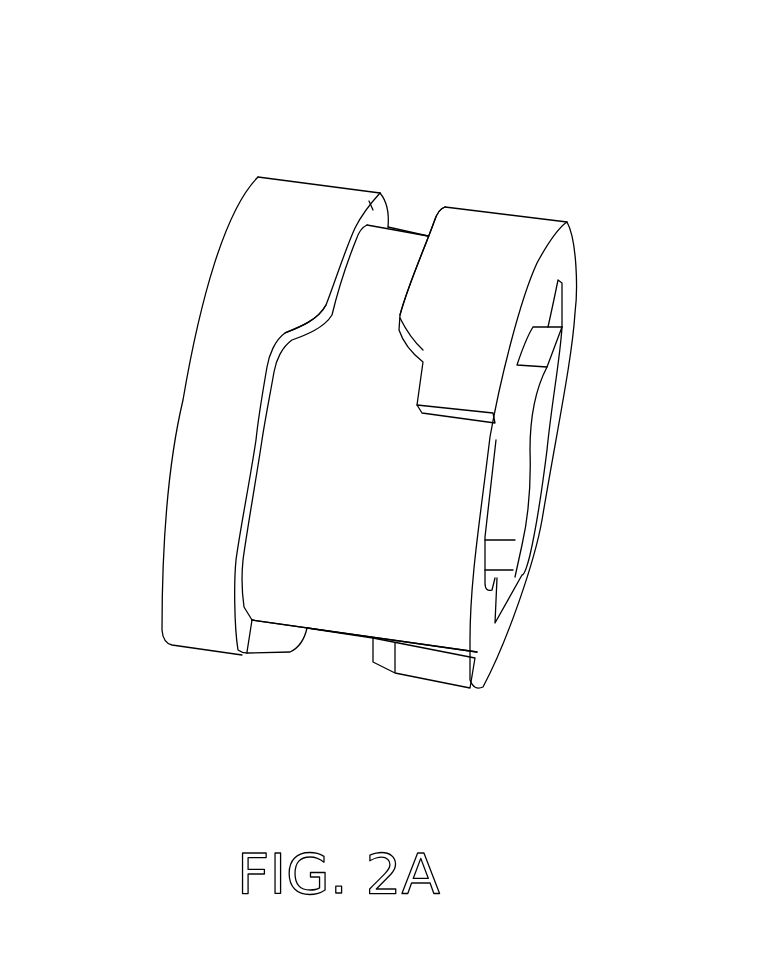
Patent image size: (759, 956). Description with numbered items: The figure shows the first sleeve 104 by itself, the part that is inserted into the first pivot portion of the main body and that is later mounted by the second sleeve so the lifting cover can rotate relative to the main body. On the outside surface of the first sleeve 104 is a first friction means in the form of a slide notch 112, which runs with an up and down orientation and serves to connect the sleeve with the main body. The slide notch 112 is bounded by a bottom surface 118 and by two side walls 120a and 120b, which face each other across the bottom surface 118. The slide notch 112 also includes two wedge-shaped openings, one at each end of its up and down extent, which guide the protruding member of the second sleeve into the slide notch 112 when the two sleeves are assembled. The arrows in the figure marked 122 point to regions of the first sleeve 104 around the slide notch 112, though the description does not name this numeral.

The first sleeve 104 is at (575, 766).
The slide notch 112 is at (408, 193).
The bottom surface 118 is at (397, 240).
The side wall 120a is at (383, 195).
The side wall 120b is at (440, 210).
The inner surface 122 is at (352, 323).